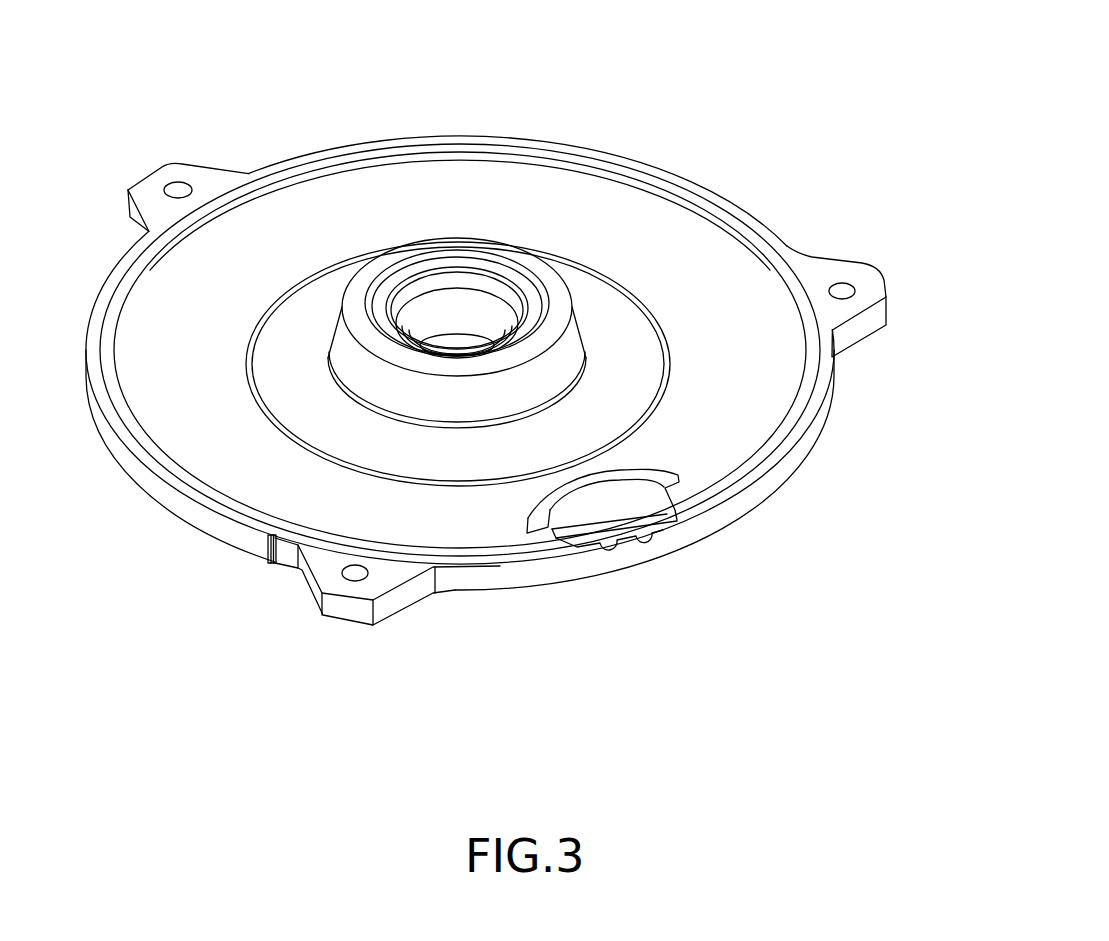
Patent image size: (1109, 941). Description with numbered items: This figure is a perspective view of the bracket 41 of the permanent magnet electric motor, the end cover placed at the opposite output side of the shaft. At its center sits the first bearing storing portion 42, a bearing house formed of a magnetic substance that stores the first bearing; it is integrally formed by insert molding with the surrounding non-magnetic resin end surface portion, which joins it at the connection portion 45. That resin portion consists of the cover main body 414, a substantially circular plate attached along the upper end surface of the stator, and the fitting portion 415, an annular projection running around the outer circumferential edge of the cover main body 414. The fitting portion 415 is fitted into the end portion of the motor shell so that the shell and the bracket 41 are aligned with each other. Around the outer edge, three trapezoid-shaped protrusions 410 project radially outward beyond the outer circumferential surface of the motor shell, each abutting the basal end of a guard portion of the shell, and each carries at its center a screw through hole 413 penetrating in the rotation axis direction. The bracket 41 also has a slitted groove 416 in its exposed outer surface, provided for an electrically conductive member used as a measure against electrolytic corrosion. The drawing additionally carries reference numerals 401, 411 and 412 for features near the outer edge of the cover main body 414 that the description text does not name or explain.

The bracket 41 is at (676, 161).
The first bearing storing portion 42 is at (454, 288).
The connection portion 45 is at (368, 366).
The positioning bumps 401 is at (647, 535).
The protrusions 410 is at (148, 194).
The arc-shaped retaining wall 411 is at (610, 508).
The retaining bar 412 is at (562, 510).
The screw through hole 413 is at (178, 190).
The cover main body 414 is at (725, 398).
The fitting portion 415 is at (752, 478).
The slitted groove 416 is at (272, 552).